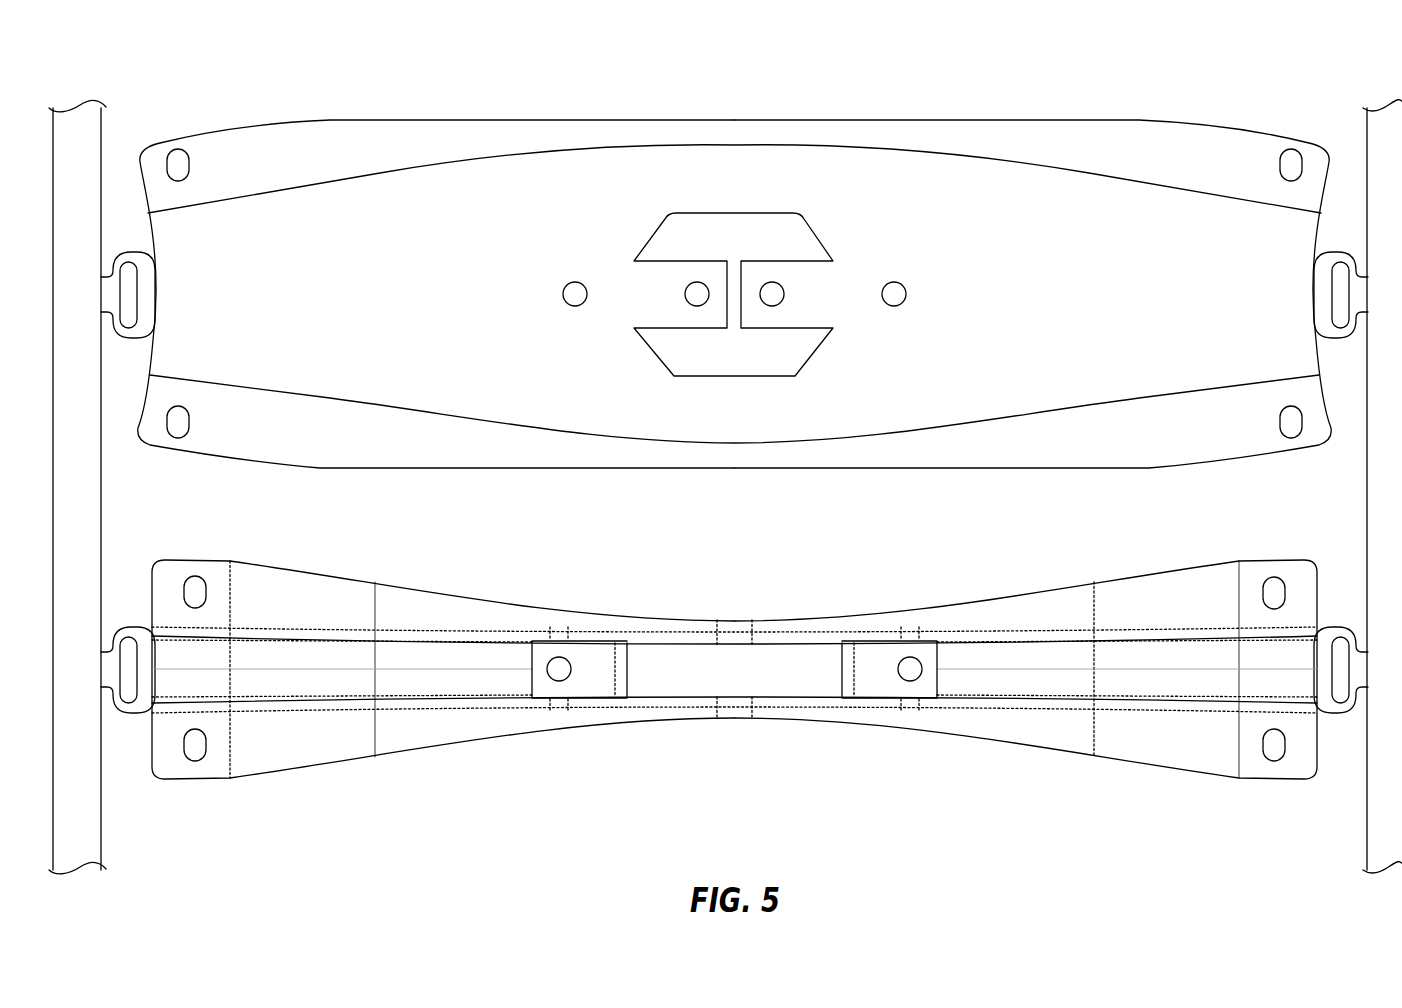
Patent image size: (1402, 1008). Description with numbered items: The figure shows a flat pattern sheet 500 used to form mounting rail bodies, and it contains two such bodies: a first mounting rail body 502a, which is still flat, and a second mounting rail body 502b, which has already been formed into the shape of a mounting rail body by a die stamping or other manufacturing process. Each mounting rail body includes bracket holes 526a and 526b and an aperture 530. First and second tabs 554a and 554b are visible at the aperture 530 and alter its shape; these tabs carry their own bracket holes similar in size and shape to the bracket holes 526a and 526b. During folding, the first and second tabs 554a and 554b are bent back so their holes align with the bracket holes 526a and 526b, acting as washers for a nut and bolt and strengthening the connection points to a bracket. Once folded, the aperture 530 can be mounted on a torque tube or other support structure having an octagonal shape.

The flat pattern sheet 500 is at (123, 61).
The first mounting rail body 502a is at (1234, 122).
The second mounting rail body 502b is at (1133, 768).
The bracket hole 526a is at (575, 282).
The bracket hole 526b is at (894, 282).
The aperture 530 is at (731, 226).
The first tab 554a is at (674, 276).
The second tab 554b is at (795, 276).